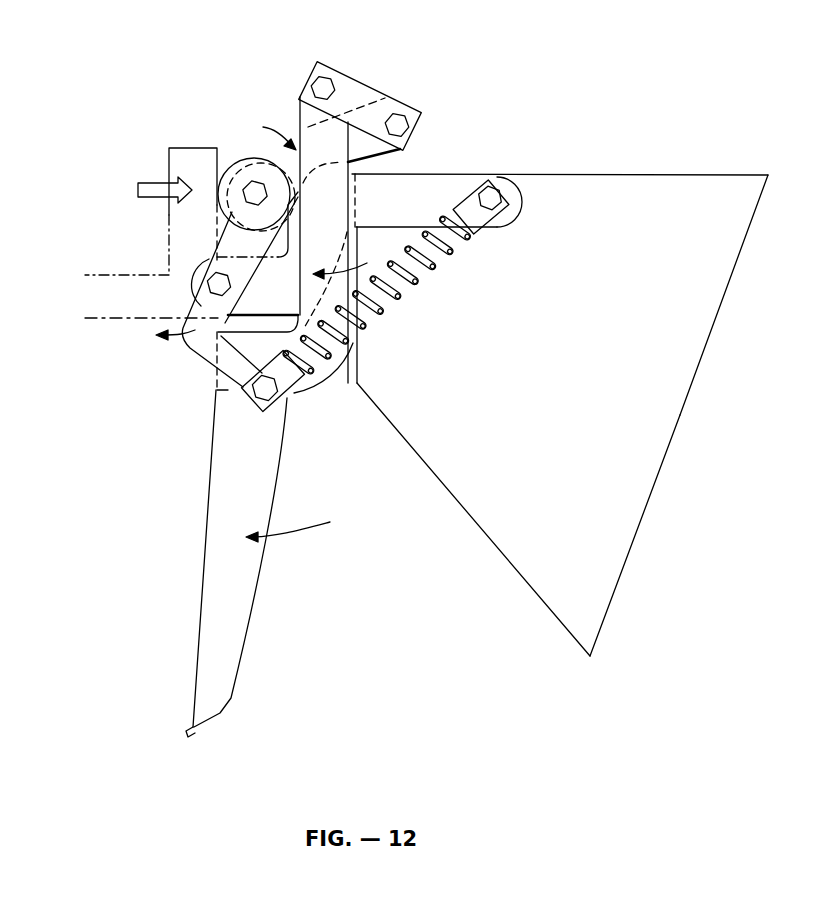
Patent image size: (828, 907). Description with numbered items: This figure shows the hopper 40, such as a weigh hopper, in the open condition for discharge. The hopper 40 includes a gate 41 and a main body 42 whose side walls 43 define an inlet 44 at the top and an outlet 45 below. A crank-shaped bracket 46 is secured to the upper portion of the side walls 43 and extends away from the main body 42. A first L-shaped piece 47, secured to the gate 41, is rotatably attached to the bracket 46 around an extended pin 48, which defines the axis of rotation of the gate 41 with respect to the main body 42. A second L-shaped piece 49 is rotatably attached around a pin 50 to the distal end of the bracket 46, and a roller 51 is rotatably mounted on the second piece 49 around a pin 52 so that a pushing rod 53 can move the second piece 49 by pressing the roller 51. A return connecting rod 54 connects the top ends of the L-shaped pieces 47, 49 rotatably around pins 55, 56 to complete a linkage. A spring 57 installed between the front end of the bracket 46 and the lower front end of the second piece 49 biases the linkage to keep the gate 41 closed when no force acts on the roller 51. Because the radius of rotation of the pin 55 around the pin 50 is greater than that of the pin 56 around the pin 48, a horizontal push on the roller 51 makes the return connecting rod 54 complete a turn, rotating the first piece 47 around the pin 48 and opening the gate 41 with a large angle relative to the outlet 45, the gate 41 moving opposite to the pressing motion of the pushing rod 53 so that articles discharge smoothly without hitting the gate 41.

The hopper 40 is at (418, 498).
The gate 41 is at (223, 422).
The main body 42 is at (730, 268).
The side walls 43 is at (676, 402).
The inlet 44 is at (641, 175).
The outlet 45 is at (503, 578).
The crank-shaped bracket 46 is at (466, 176).
The first L-shaped piece 47 is at (307, 112).
The extended pin 48 is at (352, 227).
The second L-shaped piece 49 is at (187, 343).
The pin 50 is at (217, 285).
The roller 51 is at (242, 160).
The pin 52 is at (250, 192).
The pushing rod 53 is at (118, 282).
The return connecting rod 54 is at (358, 92).
The pin 55 is at (318, 85).
The pin 56 is at (405, 130).
The spring 57 is at (392, 305).